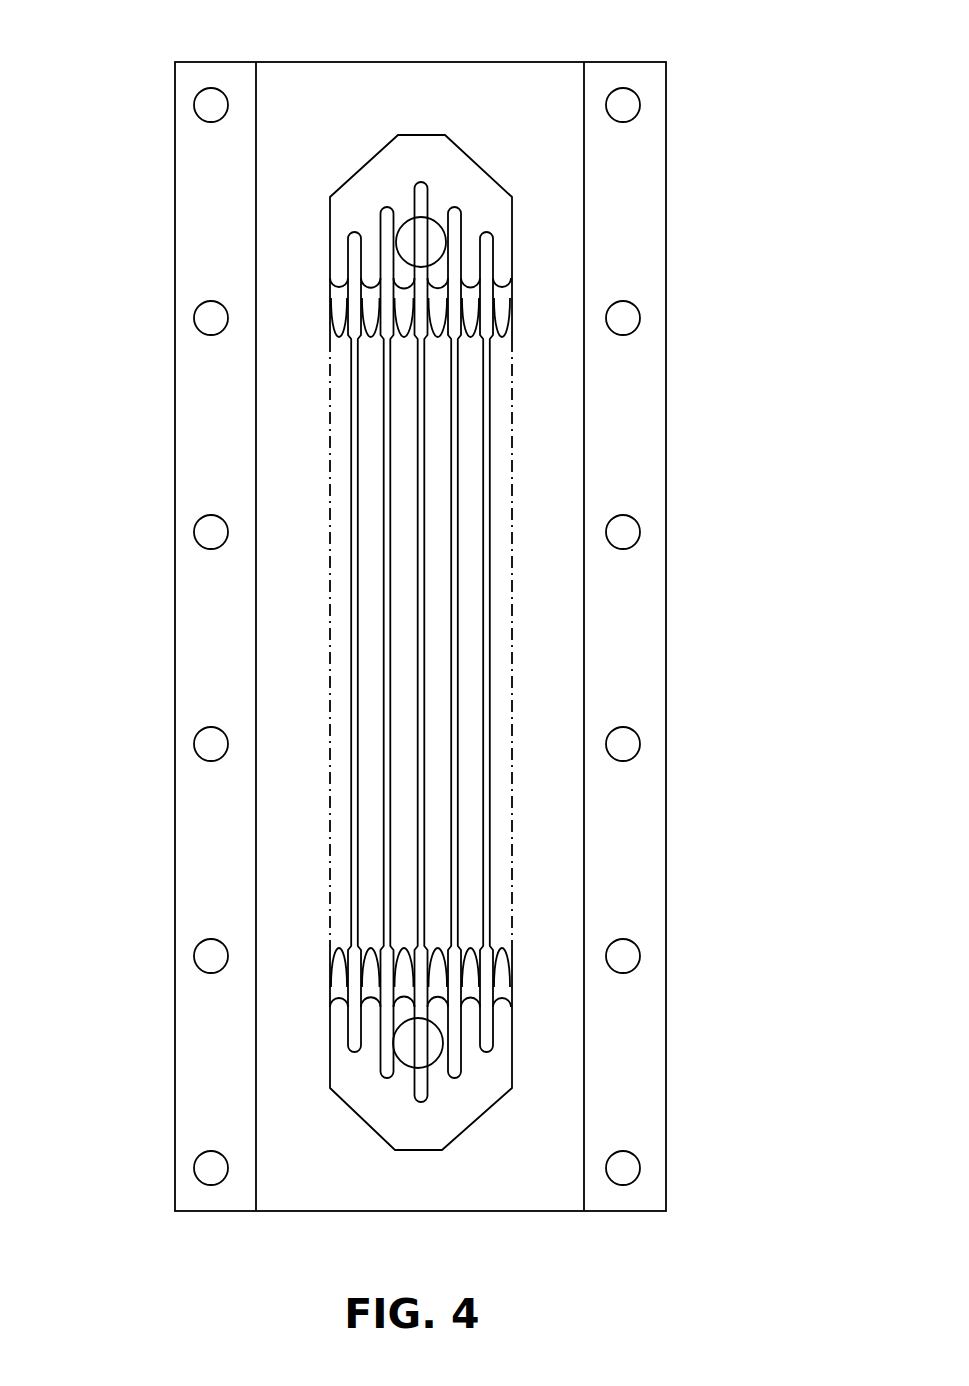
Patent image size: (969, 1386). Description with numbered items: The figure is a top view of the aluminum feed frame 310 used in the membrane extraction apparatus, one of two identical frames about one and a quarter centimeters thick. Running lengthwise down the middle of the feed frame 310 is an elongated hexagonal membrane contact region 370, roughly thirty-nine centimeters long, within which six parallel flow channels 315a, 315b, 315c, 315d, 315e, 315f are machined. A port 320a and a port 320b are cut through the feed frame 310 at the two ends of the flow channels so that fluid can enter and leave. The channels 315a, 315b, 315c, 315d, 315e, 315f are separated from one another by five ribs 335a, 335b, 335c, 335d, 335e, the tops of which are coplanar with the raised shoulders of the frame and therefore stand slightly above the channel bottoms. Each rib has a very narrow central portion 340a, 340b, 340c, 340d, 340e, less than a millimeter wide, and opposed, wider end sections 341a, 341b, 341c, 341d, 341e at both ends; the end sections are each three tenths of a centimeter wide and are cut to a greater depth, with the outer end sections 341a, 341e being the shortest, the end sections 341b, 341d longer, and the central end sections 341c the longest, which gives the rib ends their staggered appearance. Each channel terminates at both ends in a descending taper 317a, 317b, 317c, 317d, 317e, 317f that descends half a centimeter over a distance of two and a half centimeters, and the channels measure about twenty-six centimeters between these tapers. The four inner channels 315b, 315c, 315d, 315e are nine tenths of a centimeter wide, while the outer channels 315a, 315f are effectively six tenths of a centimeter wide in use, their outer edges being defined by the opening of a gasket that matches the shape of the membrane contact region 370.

The feed frame 310 is at (340, 62).
The elongated hexagonal membrane contact region 370 is at (390, 155).
The port 320a is at (435, 218).
The port 320b is at (432, 1067).
The end section 341a is at (357, 297).
The end section 341b is at (387, 283).
The end section 341c is at (421, 293).
The end section 341d is at (454, 299).
The end section 341e is at (487, 308).
The central portion 340a is at (353, 517).
The central portion 340b is at (383, 585).
The central portion 340c is at (418, 658).
The central portion 340d is at (452, 520).
The central portion 340e is at (483, 592).
The channel 315a is at (337, 485).
The channel 315b is at (363, 556).
The channel 315c is at (398, 621).
The channel 315d is at (440, 490).
The channel 315e is at (468, 560).
The channel 315f is at (502, 628).
The rib 335a is at (350, 830).
The rib 335b is at (381, 868).
The rib 335c is at (413, 907).
The rib 335d is at (457, 847).
The rib 335e is at (487, 883).
The descending taper 317a is at (333, 980).
The descending taper 317b is at (370, 987).
The descending taper 317c is at (402, 988).
The descending taper 317d is at (438, 988).
The descending taper 317e is at (467, 985).
The descending taper 317f is at (503, 980).